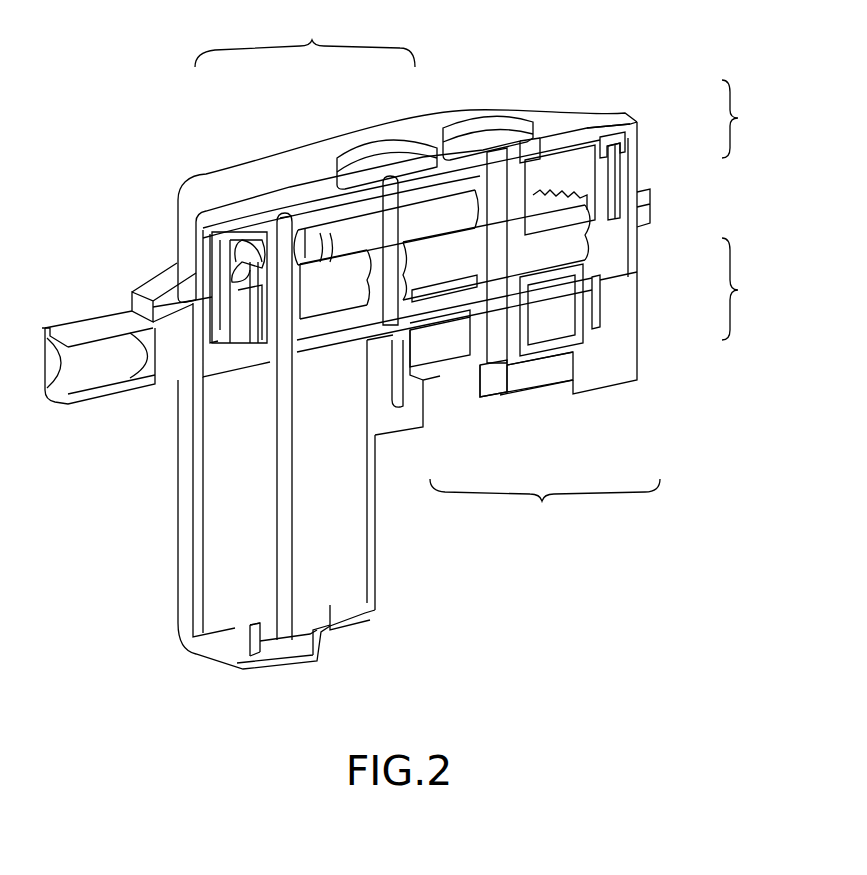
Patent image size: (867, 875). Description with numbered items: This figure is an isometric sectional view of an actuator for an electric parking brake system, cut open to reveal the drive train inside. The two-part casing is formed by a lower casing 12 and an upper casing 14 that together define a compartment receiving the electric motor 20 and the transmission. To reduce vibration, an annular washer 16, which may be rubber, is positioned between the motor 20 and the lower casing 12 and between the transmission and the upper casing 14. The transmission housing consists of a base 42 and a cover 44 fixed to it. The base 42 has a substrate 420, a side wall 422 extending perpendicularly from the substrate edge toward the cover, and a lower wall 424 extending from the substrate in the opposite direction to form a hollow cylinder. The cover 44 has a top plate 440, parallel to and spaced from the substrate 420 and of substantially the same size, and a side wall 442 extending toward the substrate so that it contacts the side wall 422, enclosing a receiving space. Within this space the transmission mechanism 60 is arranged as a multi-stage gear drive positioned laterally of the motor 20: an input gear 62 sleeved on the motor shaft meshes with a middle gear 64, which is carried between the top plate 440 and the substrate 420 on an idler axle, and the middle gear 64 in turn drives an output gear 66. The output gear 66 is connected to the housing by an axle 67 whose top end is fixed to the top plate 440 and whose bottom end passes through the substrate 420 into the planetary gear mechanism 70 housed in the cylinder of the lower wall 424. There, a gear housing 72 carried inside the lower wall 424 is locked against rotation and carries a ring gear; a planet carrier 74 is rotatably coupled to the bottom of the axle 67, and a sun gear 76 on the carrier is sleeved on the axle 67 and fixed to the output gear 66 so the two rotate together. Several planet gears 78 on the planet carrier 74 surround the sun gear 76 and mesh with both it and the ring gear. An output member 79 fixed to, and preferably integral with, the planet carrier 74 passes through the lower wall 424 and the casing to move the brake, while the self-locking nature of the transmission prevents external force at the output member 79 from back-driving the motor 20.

The lower casing 12 is at (372, 525).
The upper casing 14 is at (178, 283).
The annular washer 16 is at (535, 150).
The electric motor 20 is at (350, 578).
The transmission mechanism 60 is at (305, 39).
The input gear 62 is at (272, 245).
The middle gear 64 is at (345, 240).
The output gear 66 is at (440, 255).
The axle 67 is at (495, 175).
The planetary gear mechanism 70 is at (545, 501).
The gear housing 72 is at (592, 335).
The planet carrier 74 is at (512, 356).
The sun gear 76 is at (515, 330).
The planet gear 78 is at (448, 348).
The output member 79 is at (497, 385).
The base 42 is at (742, 289).
The substrate 420 is at (598, 272).
The side wall 422 is at (608, 240).
The lower wall 424 is at (598, 295).
The cover 44 is at (742, 119).
The top plate 440 is at (620, 112).
The side wall 442 is at (618, 170).